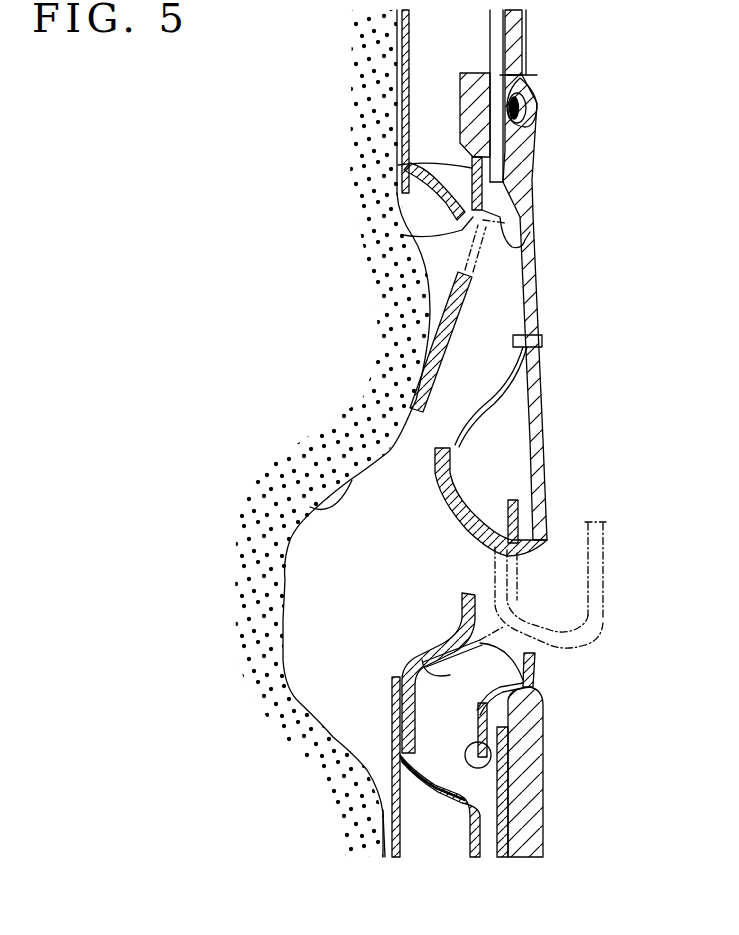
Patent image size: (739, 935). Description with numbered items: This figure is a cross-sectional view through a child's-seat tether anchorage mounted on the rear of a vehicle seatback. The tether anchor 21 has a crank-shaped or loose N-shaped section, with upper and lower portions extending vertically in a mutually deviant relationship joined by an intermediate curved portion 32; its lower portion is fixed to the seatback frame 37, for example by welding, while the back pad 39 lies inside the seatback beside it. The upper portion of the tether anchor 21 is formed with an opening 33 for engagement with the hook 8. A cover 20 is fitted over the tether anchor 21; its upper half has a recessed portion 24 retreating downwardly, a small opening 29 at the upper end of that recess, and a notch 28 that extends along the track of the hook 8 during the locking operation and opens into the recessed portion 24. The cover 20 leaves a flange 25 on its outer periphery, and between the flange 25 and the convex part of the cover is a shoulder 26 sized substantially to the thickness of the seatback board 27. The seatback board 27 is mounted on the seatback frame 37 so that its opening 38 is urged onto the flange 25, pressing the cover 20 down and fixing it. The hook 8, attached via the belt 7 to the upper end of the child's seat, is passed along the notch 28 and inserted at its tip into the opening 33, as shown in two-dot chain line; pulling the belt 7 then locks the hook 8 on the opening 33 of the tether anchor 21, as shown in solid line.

The belt 7 is at (520, 27).
The hook 8 is at (537, 283).
The cover 20 is at (455, 329).
The tether anchor 21 is at (520, 511).
The recessed portion 24 is at (440, 372).
The flange 25 is at (397, 170).
The shoulder 26 is at (523, 720).
The seatback board 27 is at (510, 167).
The notch 28 is at (533, 643).
The small opening 29 is at (407, 233).
The intermediate curved portion 32 is at (403, 655).
The opening 33 is at (507, 557).
The seatback frame 37 is at (398, 98).
The opening 38 is at (537, 240).
The back pad 39 is at (310, 507).